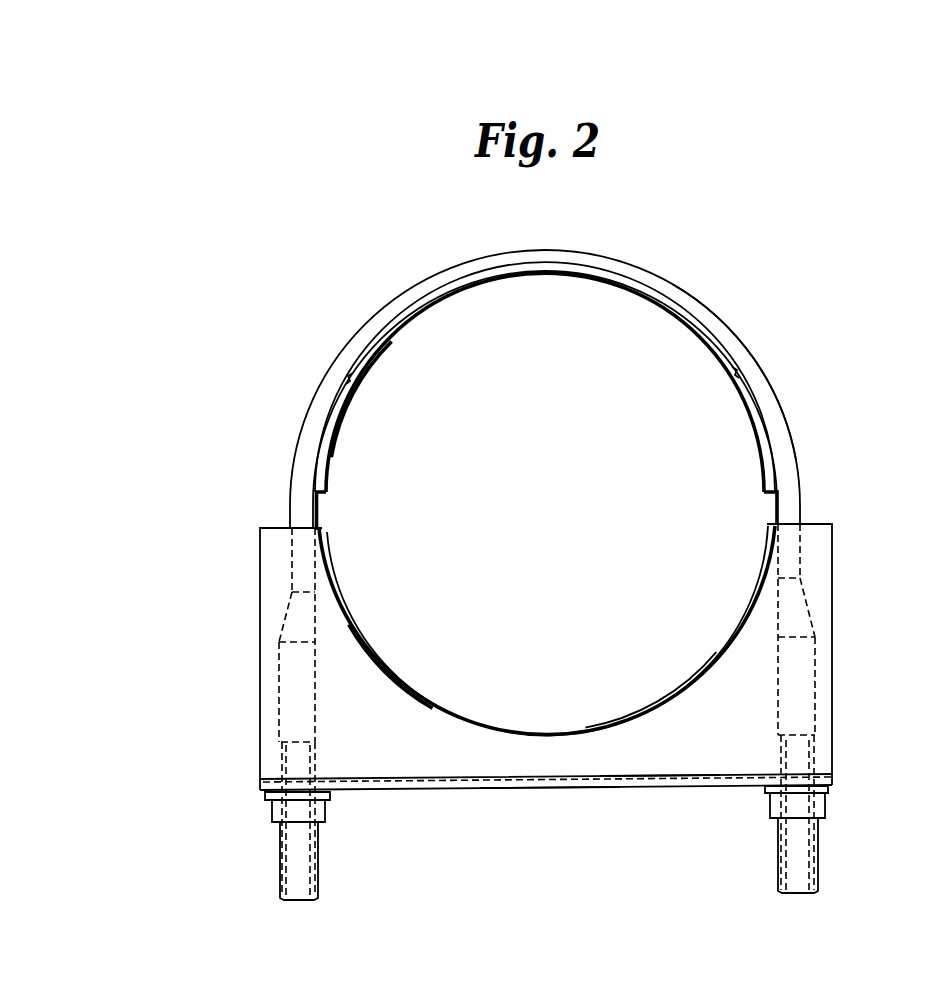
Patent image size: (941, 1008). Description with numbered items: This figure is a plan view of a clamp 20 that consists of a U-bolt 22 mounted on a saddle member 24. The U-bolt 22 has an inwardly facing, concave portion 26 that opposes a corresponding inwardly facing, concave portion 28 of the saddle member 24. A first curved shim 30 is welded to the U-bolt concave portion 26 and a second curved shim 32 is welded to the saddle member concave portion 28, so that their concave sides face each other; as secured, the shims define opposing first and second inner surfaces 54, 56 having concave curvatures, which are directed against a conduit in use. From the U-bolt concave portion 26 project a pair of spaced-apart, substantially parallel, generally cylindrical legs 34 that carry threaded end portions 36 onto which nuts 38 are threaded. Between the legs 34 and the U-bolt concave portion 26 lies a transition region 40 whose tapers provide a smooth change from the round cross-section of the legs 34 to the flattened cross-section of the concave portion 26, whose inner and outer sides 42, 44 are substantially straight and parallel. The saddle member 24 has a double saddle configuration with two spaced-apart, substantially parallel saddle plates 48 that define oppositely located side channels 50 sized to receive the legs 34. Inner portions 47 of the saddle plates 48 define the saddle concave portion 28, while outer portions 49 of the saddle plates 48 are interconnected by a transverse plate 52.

The clamp 20 is at (550, 568).
The U-bolt 22 is at (568, 375).
The saddle member 24 is at (554, 695).
The U-bolt concave portion 26 is at (546, 396).
The saddle member concave portion 28 is at (508, 732).
The first curved shim 30 is at (338, 434).
The second curved shim 32 is at (545, 628).
The legs 34 is at (550, 824).
The threaded end portions 36 is at (282, 850).
The nuts 38 is at (826, 802).
The transition region 40 is at (283, 612).
The inner side 42 is at (730, 370).
The outer side 44 is at (762, 358).
The inner portions 47 is at (607, 725).
The saddle plates 48 is at (657, 762).
The outer portions 49 is at (603, 783).
The side channels 50 is at (832, 724).
The transverse plate 52 is at (548, 788).
The first inner surface 54 is at (453, 302).
The second inner surface 56 is at (397, 668).